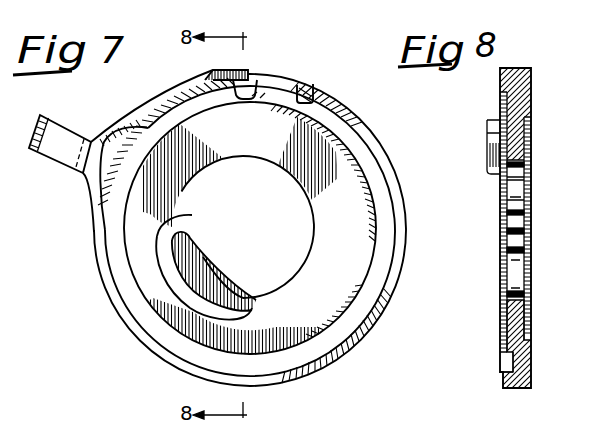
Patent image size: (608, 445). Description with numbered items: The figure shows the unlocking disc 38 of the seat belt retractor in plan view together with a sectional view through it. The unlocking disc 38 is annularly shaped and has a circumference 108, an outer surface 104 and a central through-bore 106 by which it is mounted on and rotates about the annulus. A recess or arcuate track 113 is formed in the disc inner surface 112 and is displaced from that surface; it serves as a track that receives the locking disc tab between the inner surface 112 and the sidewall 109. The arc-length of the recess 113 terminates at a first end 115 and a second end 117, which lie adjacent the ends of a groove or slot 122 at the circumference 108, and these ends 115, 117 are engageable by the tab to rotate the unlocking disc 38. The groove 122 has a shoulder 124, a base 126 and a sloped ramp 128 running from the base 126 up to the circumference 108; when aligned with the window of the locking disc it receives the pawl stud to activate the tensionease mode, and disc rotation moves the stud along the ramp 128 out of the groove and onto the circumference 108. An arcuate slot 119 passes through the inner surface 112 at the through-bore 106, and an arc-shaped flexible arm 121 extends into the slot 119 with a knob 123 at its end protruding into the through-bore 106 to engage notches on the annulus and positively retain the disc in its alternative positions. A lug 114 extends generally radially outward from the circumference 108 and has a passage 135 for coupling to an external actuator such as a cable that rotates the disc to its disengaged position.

In FIG. 8, the unlocking disc 38 is at (570, 67).
In FIG. 8, the outer surface 104 is at (527, 370).
In FIG. 7, the central through-bore 106 is at (297, 234).
In FIG. 8, the central through-bore 106 is at (512, 164).
In FIG. 7, the circumference 108 is at (322, 368).
In FIG. 8, the circumference 108 is at (520, 389).
In FIG. 8, the sidewall 109 is at (500, 380).
In FIG. 7, the disc inner surface 112 is at (340, 285).
In FIG. 8, the disc inner surface 112 is at (503, 333).
In FIG. 7, the recess or arcuate track 113 is at (132, 302).
In FIG. 8, the recess or arcuate track 113 is at (510, 367).
In FIG. 7, the lug 114 is at (83, 174).
In FIG. 7, the first end 115 is at (217, 77).
In FIG. 7, the second end 117 is at (344, 103).
In FIG. 7, the arcuate slot 119 is at (188, 220).
In FIG. 7, the arc-shaped flexible arm 121 is at (208, 285).
In FIG. 7, the groove or slot 122 is at (257, 92).
In FIG. 7, the knob 123 is at (192, 240).
In FIG. 7, the shoulder 124 is at (250, 82).
In FIG. 7, the base 126 is at (265, 93).
In FIG. 7, the sloped ramp 128 is at (300, 90).
In FIG. 7, the passage 135 is at (62, 133).